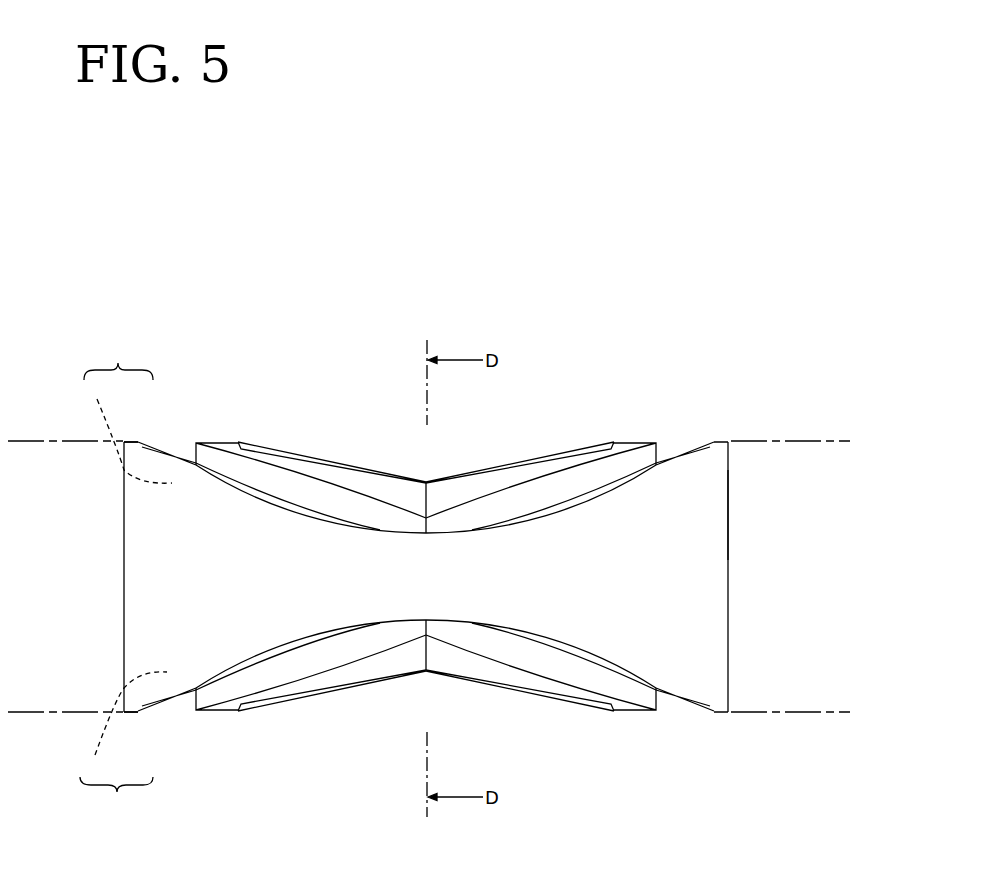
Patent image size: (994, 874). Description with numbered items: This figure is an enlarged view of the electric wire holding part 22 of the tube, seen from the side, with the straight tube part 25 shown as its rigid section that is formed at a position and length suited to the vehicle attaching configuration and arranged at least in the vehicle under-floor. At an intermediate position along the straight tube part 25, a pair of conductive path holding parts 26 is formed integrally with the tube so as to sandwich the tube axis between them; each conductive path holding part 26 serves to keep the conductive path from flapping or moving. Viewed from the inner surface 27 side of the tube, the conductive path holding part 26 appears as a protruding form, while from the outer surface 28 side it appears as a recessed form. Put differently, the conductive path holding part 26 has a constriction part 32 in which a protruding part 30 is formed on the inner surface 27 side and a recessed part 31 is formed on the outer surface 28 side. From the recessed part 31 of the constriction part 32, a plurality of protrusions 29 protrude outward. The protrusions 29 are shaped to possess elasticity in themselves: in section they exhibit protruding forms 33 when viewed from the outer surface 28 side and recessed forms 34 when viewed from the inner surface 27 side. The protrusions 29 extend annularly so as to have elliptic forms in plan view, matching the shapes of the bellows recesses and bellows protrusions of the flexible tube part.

The spring member 22 is at (632, 376).
The straight tube part 25 is at (715, 705).
The conductive path holding part 26 is at (402, 473).
The inner surface 27 is at (715, 500).
The outer surface 28 is at (715, 530).
The protrusion 29 is at (633, 446).
The protruding part 30 is at (128, 578).
The recessed part 31 is at (175, 463).
The constriction part 32 is at (116, 578).
The protruding form 33 is at (248, 483).
The recessed form 34 is at (275, 491).